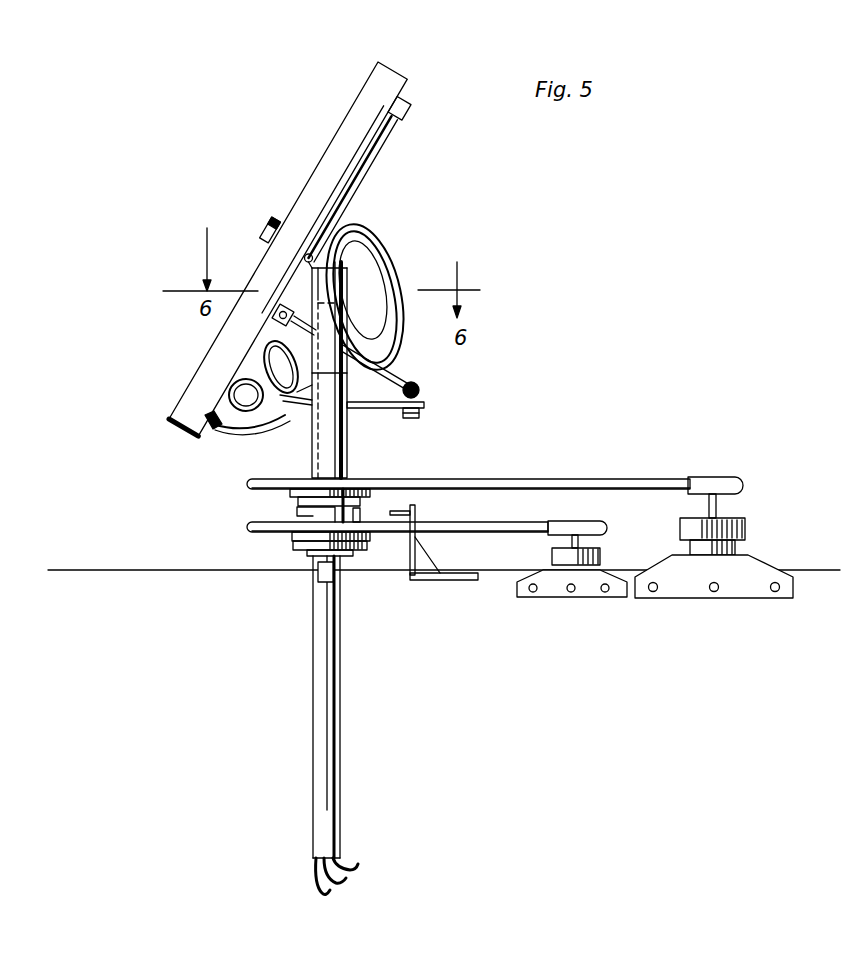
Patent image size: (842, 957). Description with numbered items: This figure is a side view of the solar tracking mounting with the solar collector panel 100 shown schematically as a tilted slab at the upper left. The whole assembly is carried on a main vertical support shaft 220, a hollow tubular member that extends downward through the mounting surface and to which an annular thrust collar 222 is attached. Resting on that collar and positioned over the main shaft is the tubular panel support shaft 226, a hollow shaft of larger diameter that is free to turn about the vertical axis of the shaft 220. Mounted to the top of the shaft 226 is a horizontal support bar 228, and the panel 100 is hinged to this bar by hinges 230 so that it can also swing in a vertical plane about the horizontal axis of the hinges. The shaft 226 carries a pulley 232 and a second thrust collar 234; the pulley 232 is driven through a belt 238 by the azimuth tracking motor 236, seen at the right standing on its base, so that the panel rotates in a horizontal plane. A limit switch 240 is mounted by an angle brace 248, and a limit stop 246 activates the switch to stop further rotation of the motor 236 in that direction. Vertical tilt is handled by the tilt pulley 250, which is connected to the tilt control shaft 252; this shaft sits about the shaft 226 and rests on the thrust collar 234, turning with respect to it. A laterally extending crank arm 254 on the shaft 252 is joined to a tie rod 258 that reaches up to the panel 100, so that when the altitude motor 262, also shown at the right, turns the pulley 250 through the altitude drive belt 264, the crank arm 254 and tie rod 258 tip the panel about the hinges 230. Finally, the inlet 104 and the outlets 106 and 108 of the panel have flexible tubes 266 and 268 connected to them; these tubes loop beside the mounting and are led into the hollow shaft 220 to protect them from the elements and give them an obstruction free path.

The solar collector panel 100 is at (408, 64).
The inlet 104 is at (171, 416).
The outlet 106 is at (408, 98).
The outlet 108 is at (213, 411).
The main vertical support shaft 220 is at (229, 412).
The annular thrust collar 222 is at (291, 548).
The tubular panel support shaft 226 is at (350, 291).
The horizontal support bar 228 is at (371, 236).
The hinges 230 is at (307, 254).
The pulley 232 is at (268, 529).
The second thrust collar 234 is at (297, 510).
The azimuth tracking motor 236 is at (567, 557).
The belt 238 is at (549, 528).
The limit switch 240 is at (266, 222).
The limit stop 246 is at (362, 513).
The angle brace 248 is at (425, 568).
The tilt pulley 250 is at (270, 482).
The tilt control shaft 252 is at (335, 432).
The crank arm 254 is at (420, 384).
The tie rod 258 is at (381, 377).
The altitude motor 262 is at (746, 530).
The altitude drive belt 264 is at (635, 480).
The flexible tube 266 is at (276, 308).
The flexible tube 268 is at (384, 150).